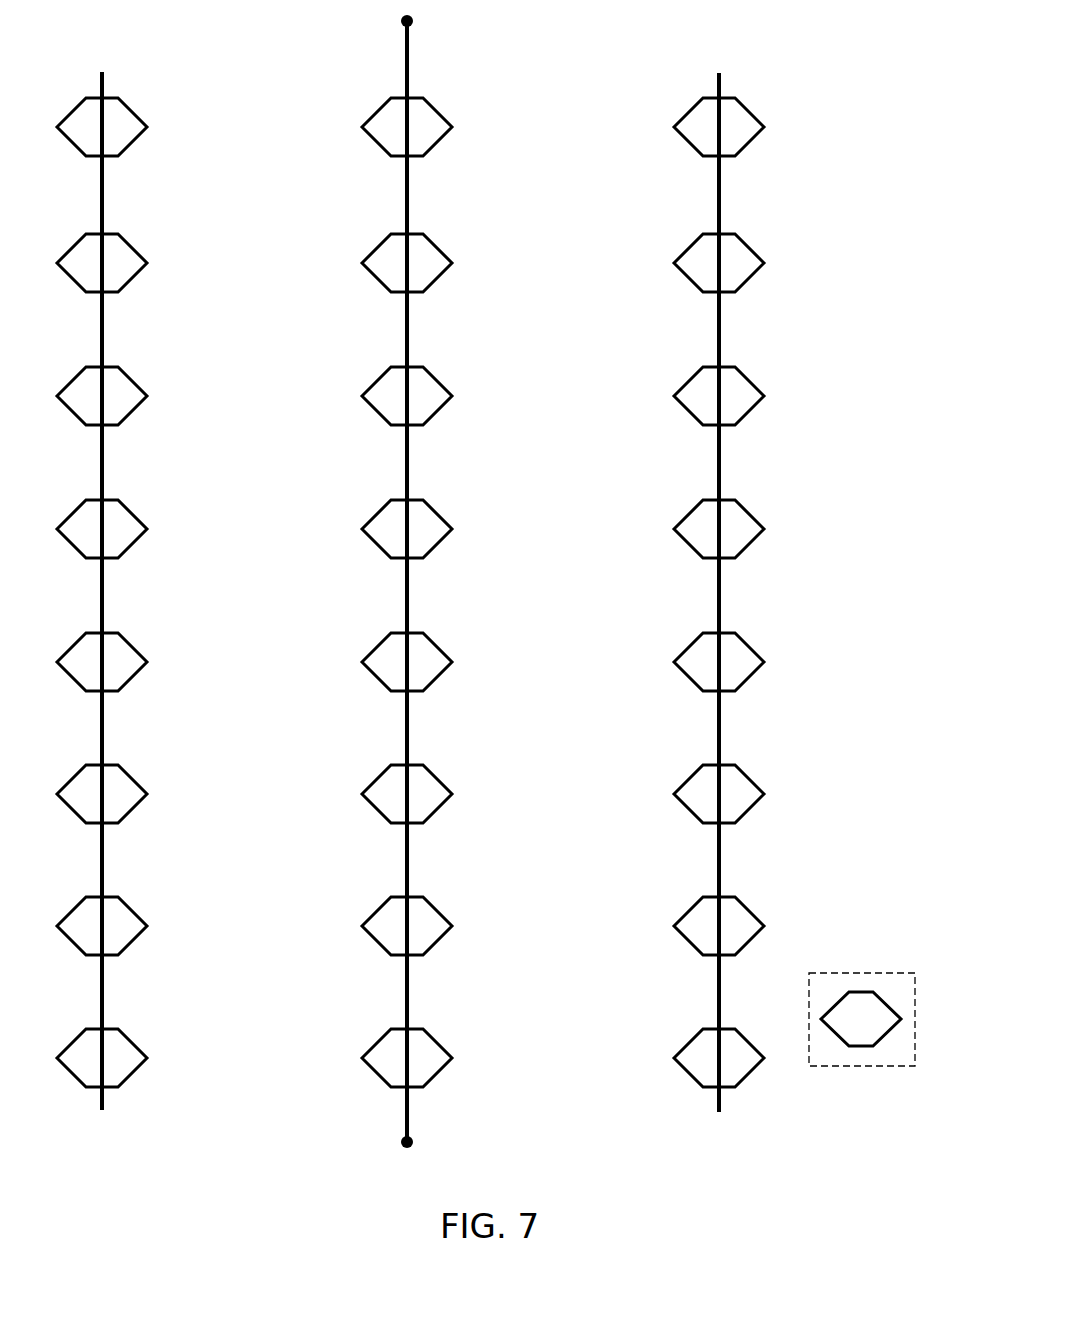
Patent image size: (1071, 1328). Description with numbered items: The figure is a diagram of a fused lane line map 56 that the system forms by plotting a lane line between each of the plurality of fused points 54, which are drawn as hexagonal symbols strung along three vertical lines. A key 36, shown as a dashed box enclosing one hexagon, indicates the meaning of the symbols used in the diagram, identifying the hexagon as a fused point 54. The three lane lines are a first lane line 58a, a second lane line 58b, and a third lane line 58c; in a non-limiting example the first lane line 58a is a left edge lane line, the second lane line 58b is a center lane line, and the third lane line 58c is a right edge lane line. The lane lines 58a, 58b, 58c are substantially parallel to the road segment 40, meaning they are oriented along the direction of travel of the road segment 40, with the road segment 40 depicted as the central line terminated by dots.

The key 36 is at (862, 973).
The road segment 40 is at (409, 57).
The fused points 54 is at (900, 1022).
The fused lane line map 56 is at (496, 578).
The first lane line 58a is at (104, 196).
The second lane line 58b is at (409, 197).
The third lane line 58c is at (721, 197).